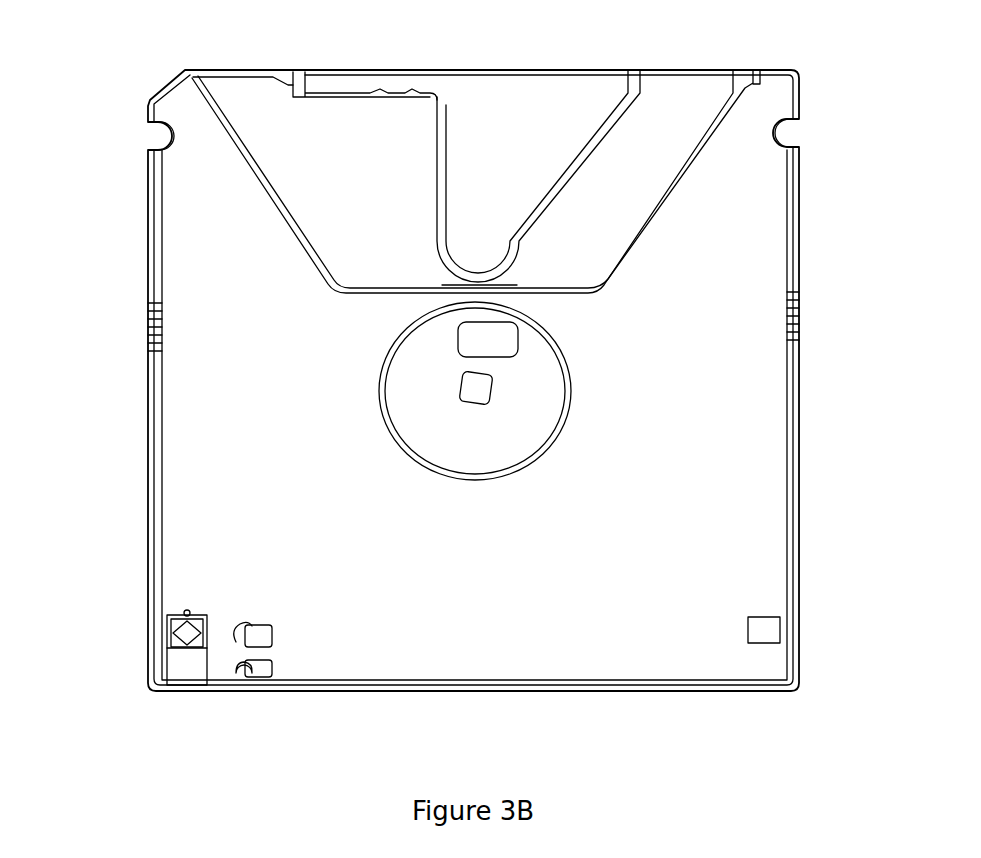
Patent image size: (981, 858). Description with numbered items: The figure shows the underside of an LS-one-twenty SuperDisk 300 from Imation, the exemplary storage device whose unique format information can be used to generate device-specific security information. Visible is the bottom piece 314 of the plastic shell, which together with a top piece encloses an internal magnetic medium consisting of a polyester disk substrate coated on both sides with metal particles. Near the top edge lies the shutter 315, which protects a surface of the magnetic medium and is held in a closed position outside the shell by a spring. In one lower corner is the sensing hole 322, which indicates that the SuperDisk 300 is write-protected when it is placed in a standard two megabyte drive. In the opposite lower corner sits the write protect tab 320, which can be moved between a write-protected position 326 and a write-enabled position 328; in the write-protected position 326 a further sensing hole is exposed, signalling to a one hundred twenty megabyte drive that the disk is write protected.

The SuperDisk 300 is at (466, 351).
The bottom piece 314 is at (793, 398).
The shutter 315 is at (587, 80).
The write protect tab 320 is at (168, 622).
The sensing hole 322 is at (767, 630).
The write-protected position 326 is at (170, 667).
The write-enabled position 328 is at (210, 627).